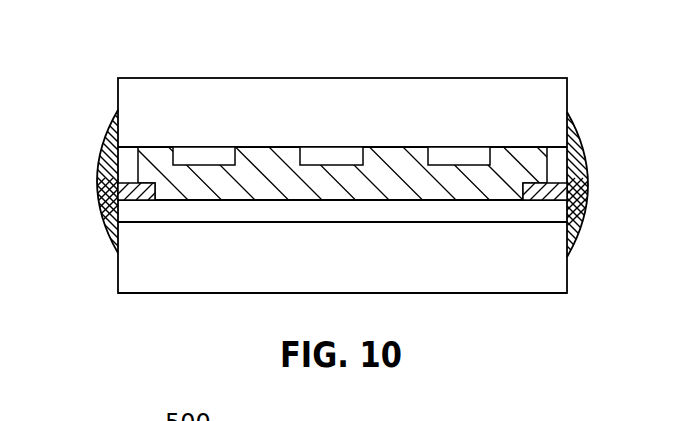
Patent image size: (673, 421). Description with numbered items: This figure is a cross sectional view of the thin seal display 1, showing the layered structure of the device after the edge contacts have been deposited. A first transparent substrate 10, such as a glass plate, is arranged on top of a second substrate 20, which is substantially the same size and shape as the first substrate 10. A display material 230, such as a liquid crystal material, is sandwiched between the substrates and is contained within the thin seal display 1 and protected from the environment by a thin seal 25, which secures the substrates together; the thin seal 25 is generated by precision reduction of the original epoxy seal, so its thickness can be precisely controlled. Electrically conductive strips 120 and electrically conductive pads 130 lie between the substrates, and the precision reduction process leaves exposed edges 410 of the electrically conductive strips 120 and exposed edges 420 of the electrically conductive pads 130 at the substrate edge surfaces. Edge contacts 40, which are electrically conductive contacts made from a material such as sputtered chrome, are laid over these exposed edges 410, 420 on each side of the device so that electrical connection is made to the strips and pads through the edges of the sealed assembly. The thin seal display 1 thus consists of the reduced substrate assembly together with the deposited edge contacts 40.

The thin seal display 1 is at (41, 74).
The first transparent substrate 10 is at (353, 78).
The second substrate 20 is at (567, 277).
The thin seal 25 is at (100, 143).
The edge contacts 40 is at (113, 118).
The electrically conductive strips 120 is at (340, 147).
The electrically conductive pads 130 is at (125, 191).
The display material 230 is at (402, 168).
The exposed edges of the electrically conductive strips 410 is at (105, 221).
The exposed edges of the electrically conductive pads 420 is at (103, 203).